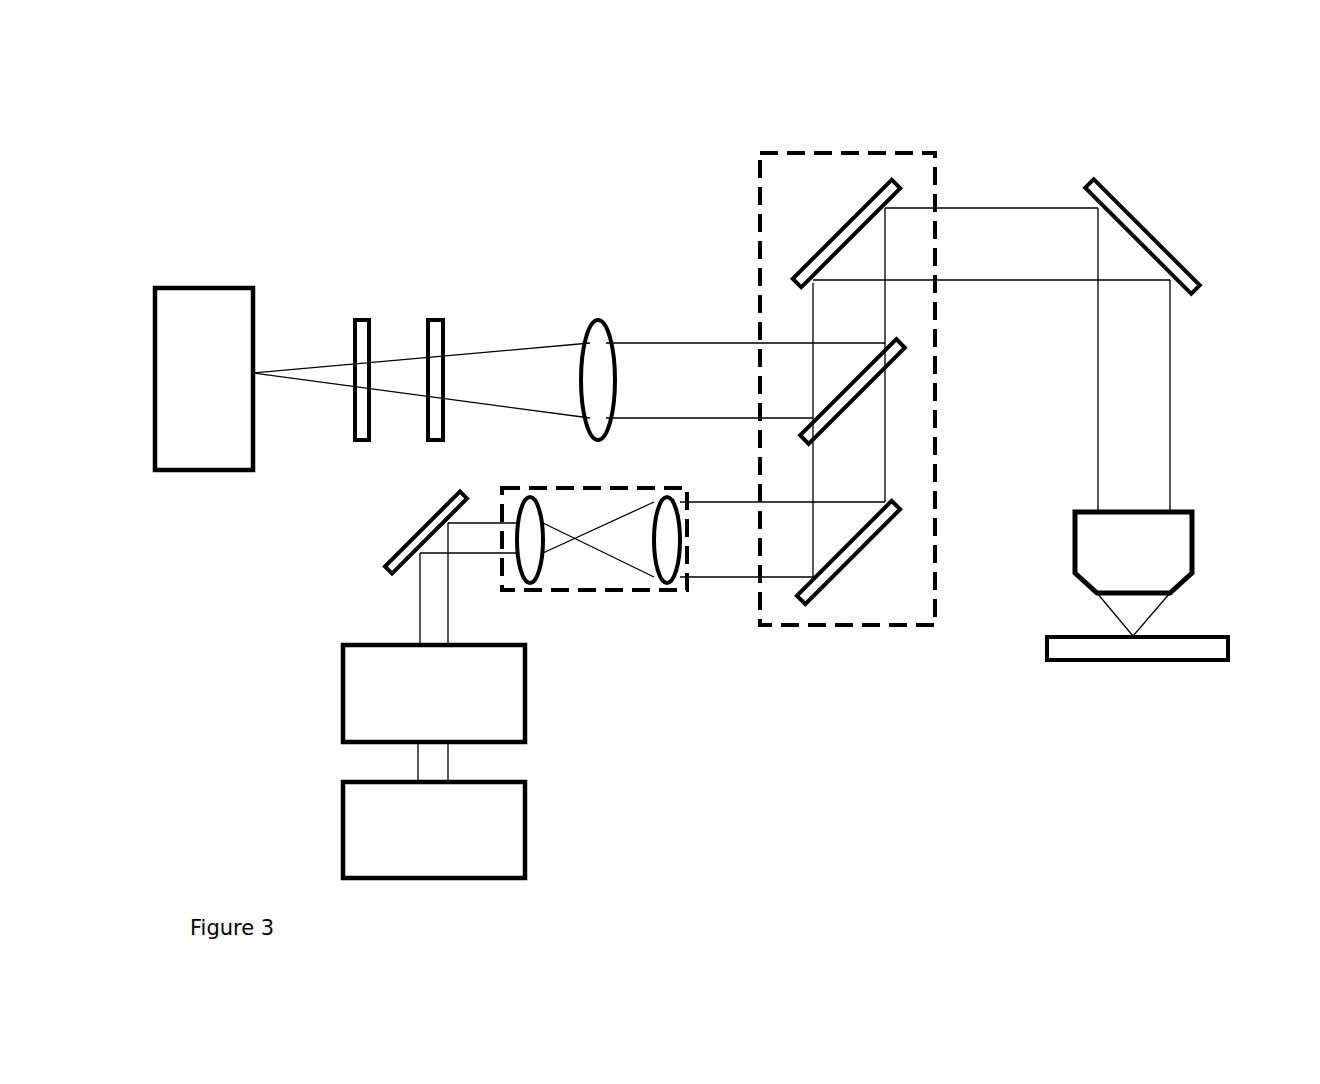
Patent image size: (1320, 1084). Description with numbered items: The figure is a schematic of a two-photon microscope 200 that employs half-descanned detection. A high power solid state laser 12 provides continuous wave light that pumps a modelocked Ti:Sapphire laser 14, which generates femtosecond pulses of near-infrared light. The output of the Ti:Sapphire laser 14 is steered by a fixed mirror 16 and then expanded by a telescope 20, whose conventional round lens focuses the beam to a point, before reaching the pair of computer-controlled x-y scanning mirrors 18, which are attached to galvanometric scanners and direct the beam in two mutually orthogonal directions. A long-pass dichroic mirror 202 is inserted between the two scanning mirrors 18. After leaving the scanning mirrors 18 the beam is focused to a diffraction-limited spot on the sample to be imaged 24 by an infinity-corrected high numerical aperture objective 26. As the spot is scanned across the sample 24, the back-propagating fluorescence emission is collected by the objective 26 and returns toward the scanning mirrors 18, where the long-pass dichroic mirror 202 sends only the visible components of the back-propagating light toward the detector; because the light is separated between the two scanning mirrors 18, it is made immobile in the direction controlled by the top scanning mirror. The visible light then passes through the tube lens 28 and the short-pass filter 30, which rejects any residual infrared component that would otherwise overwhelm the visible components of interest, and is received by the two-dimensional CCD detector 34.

The high power solid state laser 12 is at (525, 823).
The modelocked Ti:Sapphire laser 14 is at (525, 688).
The fixed mirror 16 is at (423, 528).
The x-y scanning mirrors 18 is at (940, 162).
The telescope 20 is at (662, 592).
The sample to be imaged 24 is at (1228, 658).
The infinity-corrected high numerical aperture objective 26 is at (1193, 545).
The tube lens 28 is at (598, 320).
The short-pass filter 30 is at (355, 405).
The CCD detector 34 is at (202, 287).
The microscope 200 is at (441, 216).
The long-pass dichroic mirror 202 is at (893, 365).